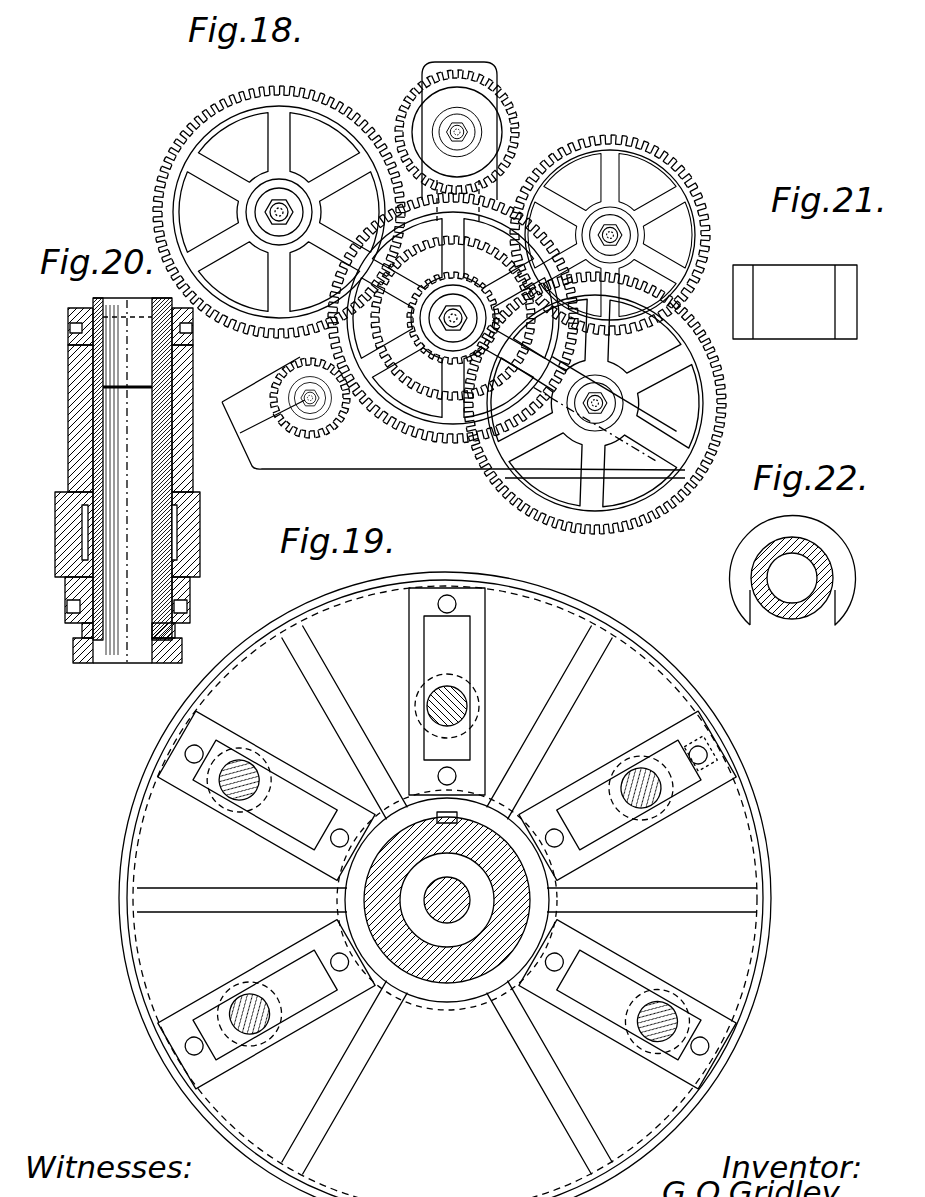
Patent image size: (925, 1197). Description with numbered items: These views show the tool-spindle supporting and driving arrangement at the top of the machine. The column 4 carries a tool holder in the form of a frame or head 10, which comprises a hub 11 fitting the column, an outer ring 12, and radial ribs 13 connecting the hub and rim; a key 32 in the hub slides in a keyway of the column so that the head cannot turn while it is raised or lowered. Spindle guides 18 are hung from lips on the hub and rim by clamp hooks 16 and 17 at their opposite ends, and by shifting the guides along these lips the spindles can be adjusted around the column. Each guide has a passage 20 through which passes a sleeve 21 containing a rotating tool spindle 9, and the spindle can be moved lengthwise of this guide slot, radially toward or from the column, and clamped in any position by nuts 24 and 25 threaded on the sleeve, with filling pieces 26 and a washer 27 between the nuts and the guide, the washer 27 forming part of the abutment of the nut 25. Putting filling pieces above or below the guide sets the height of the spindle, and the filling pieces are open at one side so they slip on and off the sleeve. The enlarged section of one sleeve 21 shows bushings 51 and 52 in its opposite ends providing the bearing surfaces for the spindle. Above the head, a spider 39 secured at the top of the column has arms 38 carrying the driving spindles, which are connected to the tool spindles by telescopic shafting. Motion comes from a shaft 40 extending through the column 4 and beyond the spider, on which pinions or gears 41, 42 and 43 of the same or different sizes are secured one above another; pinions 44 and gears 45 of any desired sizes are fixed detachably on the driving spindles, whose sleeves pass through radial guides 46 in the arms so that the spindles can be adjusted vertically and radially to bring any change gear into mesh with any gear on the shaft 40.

In FIG. 19, the column 4 is at (470, 960).
In FIG. 19, the tool spindle 9 is at (470, 705).
In FIG. 19, the frame or head 10 is at (447, 961).
In FIG. 19, the hub 11 is at (455, 1002).
In FIG. 19, the outer ring 12 is at (338, 1192).
In FIG. 19, the radial ribs 13 is at (358, 1058).
In FIG. 19, the clamp hook 16 is at (445, 770).
In FIG. 19, the clamp hook 17 is at (440, 606).
In FIG. 20, the spindle guide 18 is at (197, 528).
In FIG. 19, the spindle guide 18 is at (265, 960).
In FIG. 20, the passage 20 is at (137, 557).
In FIG. 19, the passage 20 is at (290, 810).
In FIG. 20, the sleeve 21 is at (92, 383).
In FIG. 22, the sleeve 21 is at (783, 615).
In FIG. 20, the nut 24 is at (68, 318).
In FIG. 20, the nut 25 is at (183, 620).
In FIG. 20, the filling piece 26 is at (185, 432).
In FIG. 21, the filling piece 26 is at (840, 310).
In FIG. 22, the filling piece 26 is at (765, 527).
In FIG. 20, the washer 27 is at (190, 587).
In FIG. 19, the washer 27 is at (673, 793).
In FIG. 19, the key 32 is at (383, 793).
In FIG. 18, the arm 38 is at (357, 417).
In FIG. 18, the head or spider 39 is at (422, 437).
In FIG. 19, the shaft 40 is at (562, 882).
In FIG. 18, the pinion or gear 41 is at (265, 291).
In FIG. 18, the pinion or gear 42 is at (393, 465).
In FIG. 18, the gear 43 is at (461, 447).
In FIG. 18, the pinion 44 is at (323, 443).
In FIG. 18, the gear 45 is at (615, 527).
In FIG. 18, the radial guide 46 is at (275, 430).
In FIG. 20, the bushing 51 is at (128, 332).
In FIG. 20, the bushing 52 is at (135, 650).